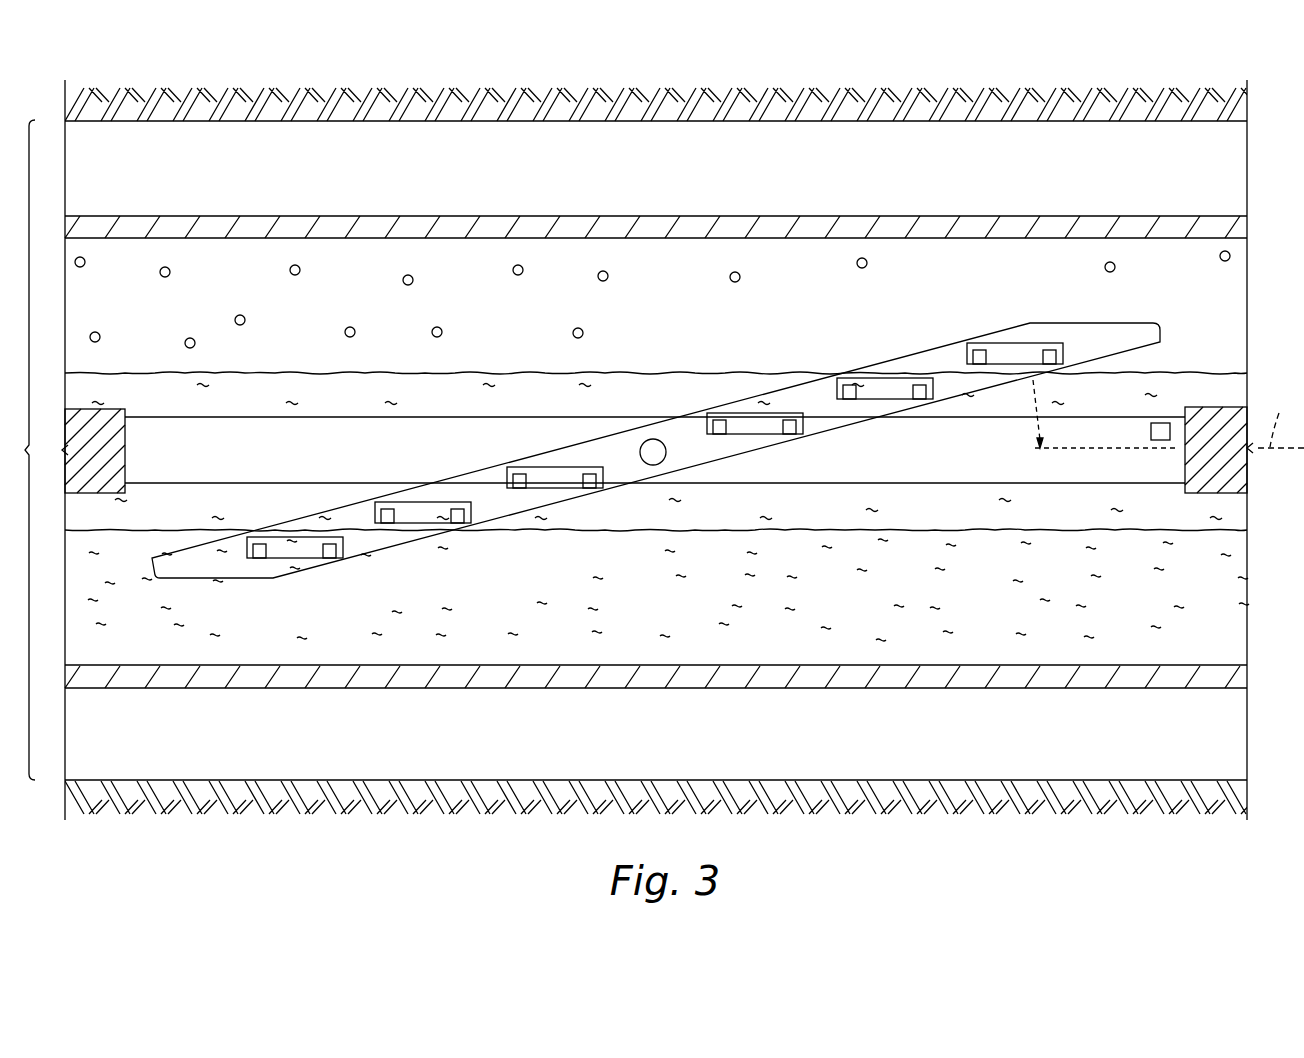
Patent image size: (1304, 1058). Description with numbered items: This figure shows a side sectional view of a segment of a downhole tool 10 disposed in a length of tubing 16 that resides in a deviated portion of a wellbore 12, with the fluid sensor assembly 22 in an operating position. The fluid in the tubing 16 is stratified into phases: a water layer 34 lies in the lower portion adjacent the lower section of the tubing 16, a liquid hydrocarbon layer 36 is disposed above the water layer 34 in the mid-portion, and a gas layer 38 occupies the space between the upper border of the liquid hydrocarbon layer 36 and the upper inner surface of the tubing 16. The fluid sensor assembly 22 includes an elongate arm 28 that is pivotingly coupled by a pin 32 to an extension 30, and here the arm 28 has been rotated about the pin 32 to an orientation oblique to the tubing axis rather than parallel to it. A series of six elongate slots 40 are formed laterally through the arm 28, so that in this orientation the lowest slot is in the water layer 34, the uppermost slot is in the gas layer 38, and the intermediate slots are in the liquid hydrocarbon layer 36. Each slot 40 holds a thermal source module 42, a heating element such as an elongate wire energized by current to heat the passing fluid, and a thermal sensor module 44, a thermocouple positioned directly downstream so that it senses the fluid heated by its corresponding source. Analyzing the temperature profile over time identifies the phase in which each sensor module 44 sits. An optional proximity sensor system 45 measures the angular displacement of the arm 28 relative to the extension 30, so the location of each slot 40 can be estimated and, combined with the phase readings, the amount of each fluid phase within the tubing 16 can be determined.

The downhole tool 10 is at (152, 316).
The wellbore 12 is at (644, 184).
The tubing 16 is at (860, 216).
The fluid sensor assembly 22 is at (522, 347).
The elongate arm 28 is at (1130, 332).
The extension 30 is at (1210, 407).
The pin 32 is at (653, 465).
The water layer 34 is at (644, 610).
The liquid hydrocarbon layer 36 is at (644, 405).
The gas layer 38 is at (644, 317).
The elongate slots 40 is at (1016, 343).
The thermal source modules 42 is at (978, 350).
The thermal sensor modules 44 is at (1050, 350).
The proximity sensor system 45 is at (1162, 422).